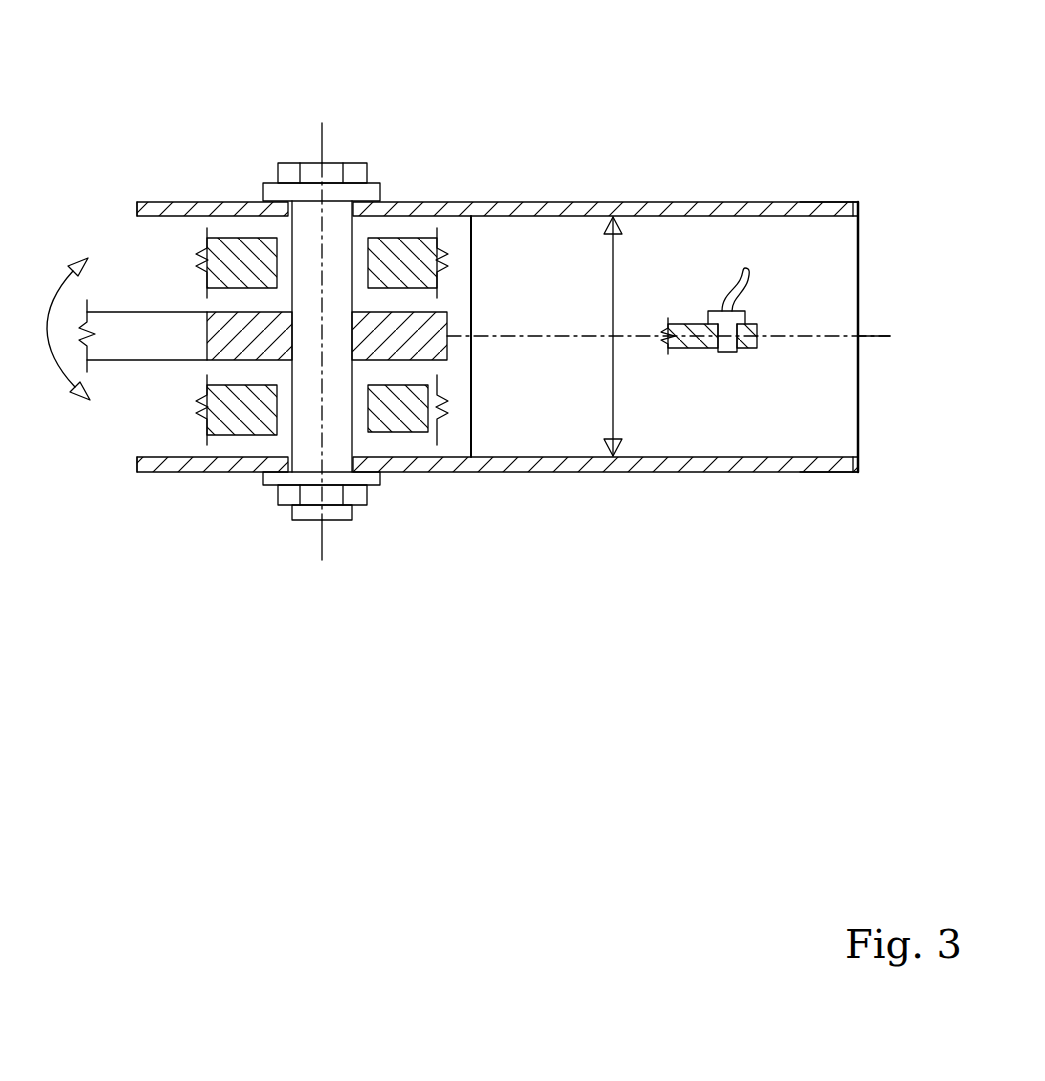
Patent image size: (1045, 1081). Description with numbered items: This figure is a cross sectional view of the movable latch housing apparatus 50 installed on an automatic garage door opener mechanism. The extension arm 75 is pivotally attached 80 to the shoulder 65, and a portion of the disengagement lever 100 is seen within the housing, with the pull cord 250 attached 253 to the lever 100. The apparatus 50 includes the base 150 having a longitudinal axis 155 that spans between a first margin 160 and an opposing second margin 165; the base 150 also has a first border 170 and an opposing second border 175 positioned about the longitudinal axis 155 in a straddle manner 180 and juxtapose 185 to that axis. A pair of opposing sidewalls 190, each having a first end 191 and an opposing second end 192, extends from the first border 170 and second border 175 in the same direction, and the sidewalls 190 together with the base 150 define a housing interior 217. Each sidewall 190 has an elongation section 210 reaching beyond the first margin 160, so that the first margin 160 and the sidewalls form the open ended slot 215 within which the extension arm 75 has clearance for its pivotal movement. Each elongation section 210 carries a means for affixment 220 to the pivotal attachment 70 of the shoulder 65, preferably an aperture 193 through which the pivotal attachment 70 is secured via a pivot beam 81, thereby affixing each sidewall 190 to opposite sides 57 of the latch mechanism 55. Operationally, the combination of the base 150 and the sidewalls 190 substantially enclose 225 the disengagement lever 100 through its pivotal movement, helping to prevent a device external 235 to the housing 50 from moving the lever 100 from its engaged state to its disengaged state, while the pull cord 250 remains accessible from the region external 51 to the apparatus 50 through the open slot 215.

The movable latch housing apparatus 50 is at (800, 85).
The external 51 is at (642, 50).
The latch mechanism 55 is at (48, 372).
The opposite sides 57 is at (197, 335).
The shoulder 65 is at (415, 252).
The pivotal attachment 70 is at (395, 248).
The extension arm 75 is at (263, 355).
The pivotally attached 80 is at (235, 328).
The pivot beam 81 is at (292, 336).
The disengagement lever 100 is at (801, 379).
The base 150 is at (649, 330).
The longitudinal axis 155 is at (880, 336).
The first margin 160 is at (471, 277).
The second margin 165 is at (858, 432).
The first border 170 is at (738, 472).
The second border 175 is at (742, 202).
The straddle manner 180 is at (642, 293).
The juxtapose 185 is at (611, 202).
The sidewalls 190 is at (825, 202).
The first end 191 is at (137, 210).
The second end 192 is at (858, 205).
The aperture 193 is at (255, 208).
The elongation section 210 is at (304, 337).
The open ended slot 215 is at (170, 250).
The housing interior 217 is at (562, 409).
The means for affixment 220 is at (292, 336).
The substantially enclose 225 is at (790, 572).
The external 235 is at (603, 574).
The pull cord 250 is at (752, 272).
The attached 253 is at (745, 320).